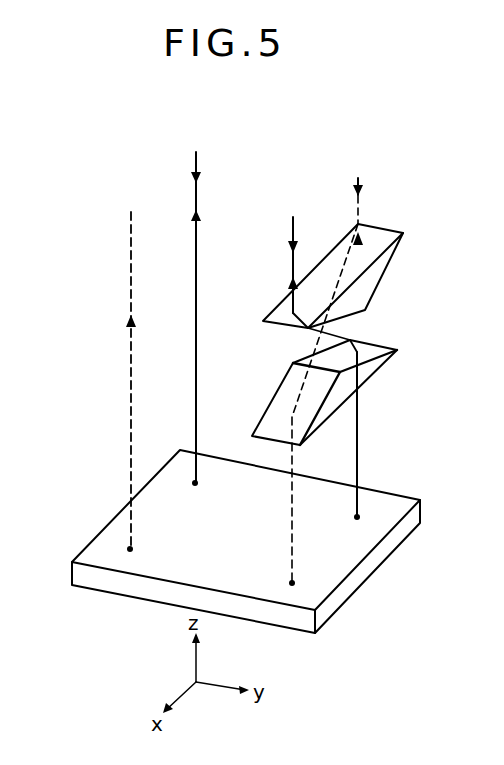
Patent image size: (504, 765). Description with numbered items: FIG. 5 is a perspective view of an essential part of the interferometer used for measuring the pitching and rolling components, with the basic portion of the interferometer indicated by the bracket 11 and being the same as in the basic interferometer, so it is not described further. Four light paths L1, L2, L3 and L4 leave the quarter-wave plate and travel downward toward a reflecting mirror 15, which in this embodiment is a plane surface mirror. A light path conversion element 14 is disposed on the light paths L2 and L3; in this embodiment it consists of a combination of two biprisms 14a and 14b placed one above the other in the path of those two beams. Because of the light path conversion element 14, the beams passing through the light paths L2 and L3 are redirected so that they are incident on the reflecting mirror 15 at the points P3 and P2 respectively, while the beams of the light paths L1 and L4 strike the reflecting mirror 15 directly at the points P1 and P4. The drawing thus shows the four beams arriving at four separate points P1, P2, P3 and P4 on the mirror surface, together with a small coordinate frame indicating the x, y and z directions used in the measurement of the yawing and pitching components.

The light source unit 11 is at (380, 141).
The first light path L1 is at (198, 240).
The second light path L2 is at (360, 215).
The third light path L3 is at (291, 268).
The fourth light path L4 is at (130, 289).
The light path conversion element 14 is at (378, 370).
The biprism 14a is at (383, 277).
The biprism 14b is at (380, 347).
The reflecting mirror 15 is at (383, 535).
The point of incidence P1 is at (214, 495).
The point of incidence P2 is at (374, 520).
The point of incidence P3 is at (309, 586).
The point of incidence P4 is at (149, 555).